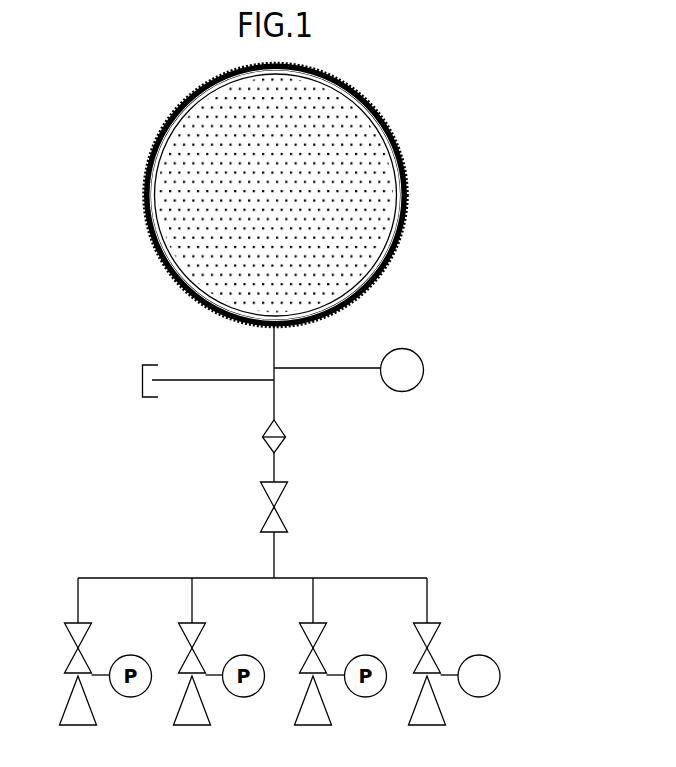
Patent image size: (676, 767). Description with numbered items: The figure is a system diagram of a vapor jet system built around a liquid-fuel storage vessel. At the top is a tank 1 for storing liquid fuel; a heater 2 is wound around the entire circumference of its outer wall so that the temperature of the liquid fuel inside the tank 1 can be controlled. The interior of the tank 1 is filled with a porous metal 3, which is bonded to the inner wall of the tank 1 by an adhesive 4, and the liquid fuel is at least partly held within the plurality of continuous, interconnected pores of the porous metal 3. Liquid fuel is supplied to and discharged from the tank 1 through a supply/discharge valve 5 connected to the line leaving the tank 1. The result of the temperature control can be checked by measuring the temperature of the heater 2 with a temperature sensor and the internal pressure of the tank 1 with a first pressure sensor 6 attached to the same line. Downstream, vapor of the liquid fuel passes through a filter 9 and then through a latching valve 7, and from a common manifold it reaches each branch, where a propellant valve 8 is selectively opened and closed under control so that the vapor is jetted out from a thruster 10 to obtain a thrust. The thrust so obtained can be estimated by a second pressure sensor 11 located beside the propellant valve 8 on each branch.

The tank 1 is at (419, 158).
The heater 2 is at (385, 123).
The porous metal 3 is at (248, 192).
The adhesive 4 is at (405, 218).
The supply/discharge valve 5 is at (142, 381).
The first pressure sensor 6 is at (424, 364).
The latching valve 7 is at (278, 507).
The propellant valve 8 is at (428, 650).
The filter 9 is at (286, 437).
The thruster 10 is at (442, 713).
The second pressure sensor 11 is at (500, 670).